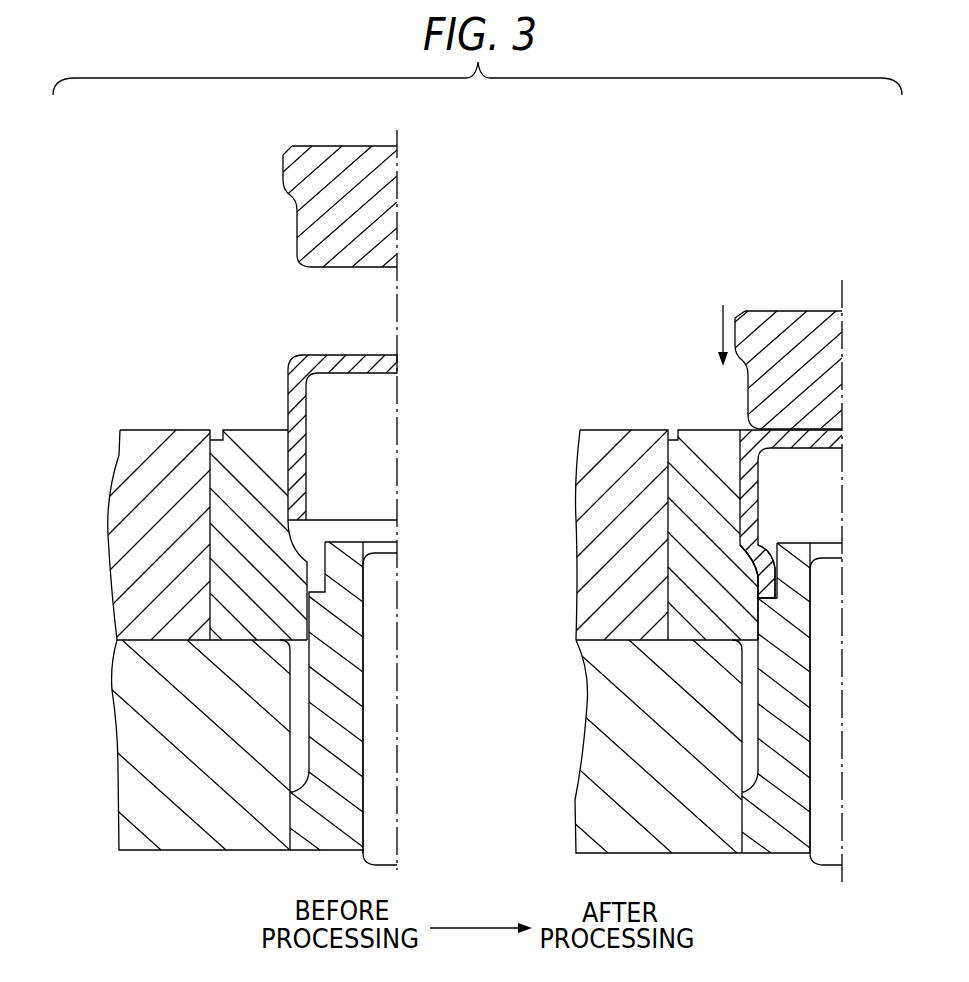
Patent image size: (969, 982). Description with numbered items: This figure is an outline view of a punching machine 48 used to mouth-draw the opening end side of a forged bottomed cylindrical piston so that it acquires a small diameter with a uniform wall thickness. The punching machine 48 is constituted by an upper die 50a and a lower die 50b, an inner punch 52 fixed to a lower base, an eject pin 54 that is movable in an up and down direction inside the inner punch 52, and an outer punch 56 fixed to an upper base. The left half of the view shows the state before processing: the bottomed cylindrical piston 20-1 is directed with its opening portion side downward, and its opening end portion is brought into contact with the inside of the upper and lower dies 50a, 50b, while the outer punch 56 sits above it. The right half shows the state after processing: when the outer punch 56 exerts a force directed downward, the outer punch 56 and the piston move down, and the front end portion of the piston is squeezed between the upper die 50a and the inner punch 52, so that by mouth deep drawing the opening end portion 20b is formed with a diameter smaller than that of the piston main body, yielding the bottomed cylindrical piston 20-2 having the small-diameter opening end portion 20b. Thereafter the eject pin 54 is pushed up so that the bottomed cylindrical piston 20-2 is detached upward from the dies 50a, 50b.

The punching machine 48 is at (519, 449).
The outer punch 56 is at (318, 203).
The bottomed cylindrical piston 20-1 is at (297, 409).
The bottomed cylindrical piston 20-2 is at (747, 498).
The opening end portion 20b is at (767, 594).
The upper die 50a is at (124, 538).
The lower die 50b is at (128, 735).
The inner punch 52 is at (336, 692).
The eject pin 54 is at (388, 735).